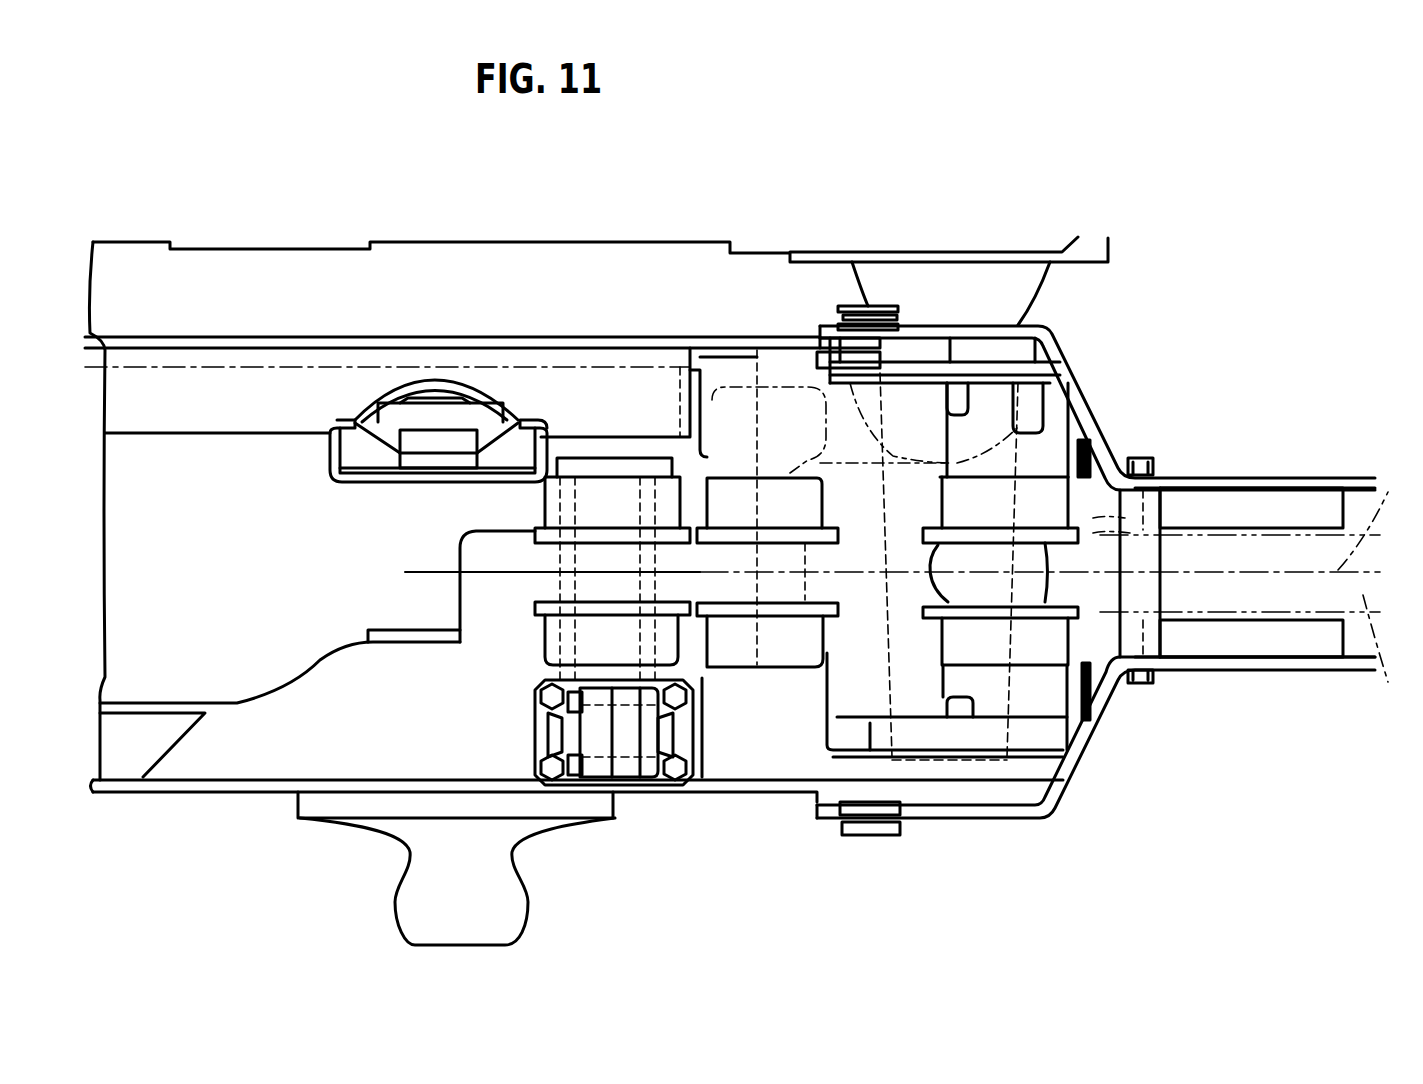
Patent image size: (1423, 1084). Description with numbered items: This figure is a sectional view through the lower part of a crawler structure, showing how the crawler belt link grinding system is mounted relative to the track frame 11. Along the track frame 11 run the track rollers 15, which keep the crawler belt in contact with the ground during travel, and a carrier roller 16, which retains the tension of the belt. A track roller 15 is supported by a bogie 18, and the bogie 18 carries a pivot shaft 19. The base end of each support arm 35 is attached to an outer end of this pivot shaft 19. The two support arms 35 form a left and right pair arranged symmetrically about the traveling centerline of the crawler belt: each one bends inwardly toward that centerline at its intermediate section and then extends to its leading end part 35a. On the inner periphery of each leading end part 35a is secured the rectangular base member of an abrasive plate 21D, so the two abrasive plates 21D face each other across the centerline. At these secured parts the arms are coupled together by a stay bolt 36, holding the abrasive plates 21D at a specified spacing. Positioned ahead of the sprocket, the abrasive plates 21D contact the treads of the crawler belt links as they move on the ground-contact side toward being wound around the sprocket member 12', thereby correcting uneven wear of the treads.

The track frame 11 is at (237, 470).
The sprocket member 12' is at (909, 591).
The track roller 15 is at (770, 648).
The carrier roller 16 is at (626, 492).
The bogie 18 is at (822, 810).
The pivot shaft 19 is at (887, 370).
The abrasive plate 21D is at (1265, 500).
The support arm 35 is at (1082, 395).
The leading end part 35a is at (1325, 478).
The stay bolt 36 is at (1140, 572).